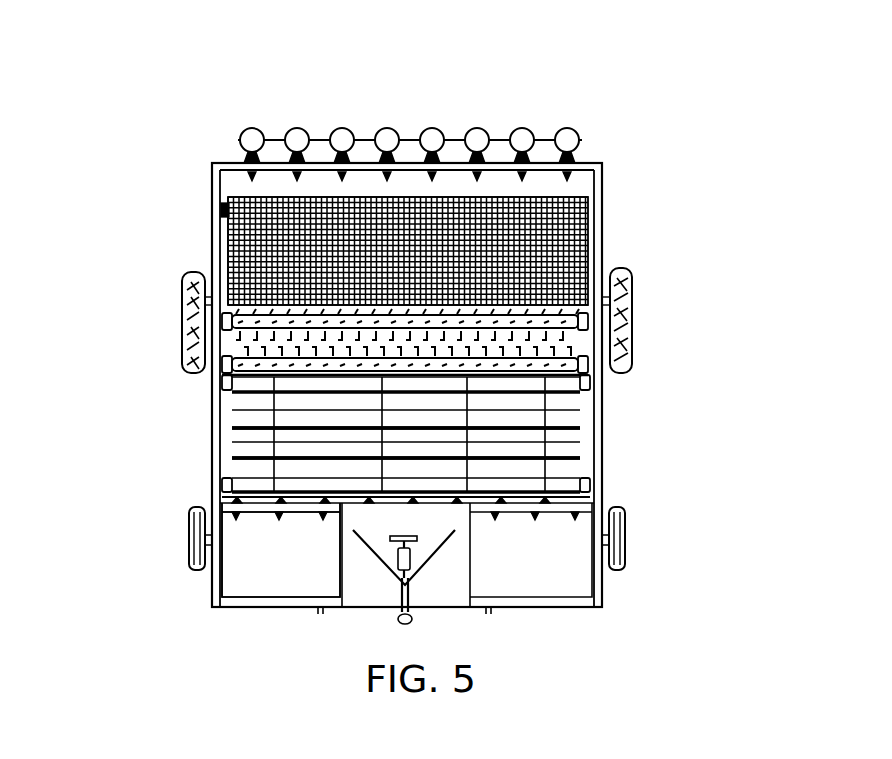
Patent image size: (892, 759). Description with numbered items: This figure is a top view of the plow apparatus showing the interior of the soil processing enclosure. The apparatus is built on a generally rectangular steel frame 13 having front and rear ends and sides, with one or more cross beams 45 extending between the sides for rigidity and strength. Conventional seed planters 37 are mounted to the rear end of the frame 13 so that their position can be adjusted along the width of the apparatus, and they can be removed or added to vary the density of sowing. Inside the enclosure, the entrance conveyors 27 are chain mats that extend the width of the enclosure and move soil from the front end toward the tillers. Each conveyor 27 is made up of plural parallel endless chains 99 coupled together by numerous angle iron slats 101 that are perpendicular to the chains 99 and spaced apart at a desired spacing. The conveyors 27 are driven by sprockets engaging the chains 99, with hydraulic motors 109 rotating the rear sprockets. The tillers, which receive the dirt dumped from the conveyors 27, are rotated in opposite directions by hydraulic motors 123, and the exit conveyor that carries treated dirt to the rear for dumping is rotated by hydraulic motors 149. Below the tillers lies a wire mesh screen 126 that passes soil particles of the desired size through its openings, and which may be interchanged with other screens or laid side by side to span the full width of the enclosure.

The frame 13 is at (601, 183).
The seed planters 37 is at (344, 135).
The screen 126 is at (600, 257).
The hydraulic motors 149 is at (222, 212).
The hydraulic motors 123 is at (590, 364).
The hydraulic motors 109 is at (222, 384).
The endless chains 99 is at (582, 392).
The entrance conveyors 27 is at (566, 442).
The slats 101 is at (548, 450).
The cross beams 45 is at (272, 505).